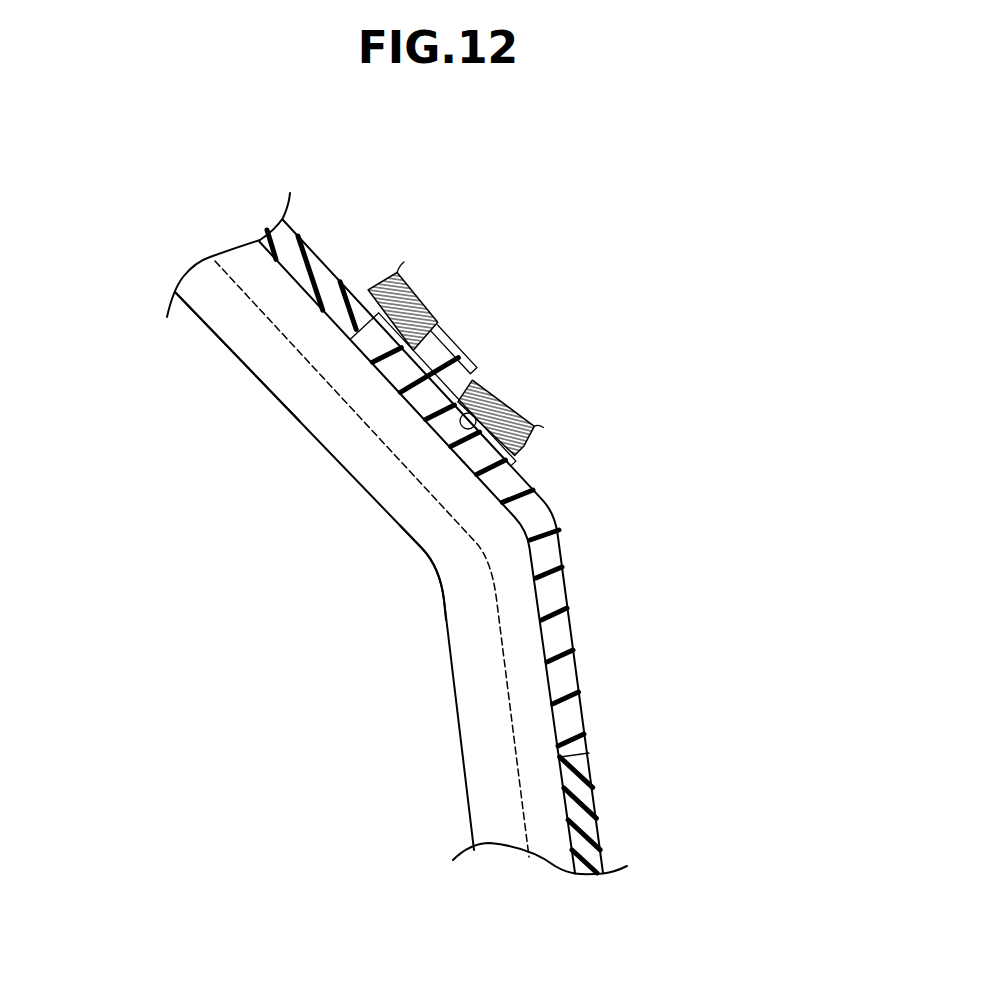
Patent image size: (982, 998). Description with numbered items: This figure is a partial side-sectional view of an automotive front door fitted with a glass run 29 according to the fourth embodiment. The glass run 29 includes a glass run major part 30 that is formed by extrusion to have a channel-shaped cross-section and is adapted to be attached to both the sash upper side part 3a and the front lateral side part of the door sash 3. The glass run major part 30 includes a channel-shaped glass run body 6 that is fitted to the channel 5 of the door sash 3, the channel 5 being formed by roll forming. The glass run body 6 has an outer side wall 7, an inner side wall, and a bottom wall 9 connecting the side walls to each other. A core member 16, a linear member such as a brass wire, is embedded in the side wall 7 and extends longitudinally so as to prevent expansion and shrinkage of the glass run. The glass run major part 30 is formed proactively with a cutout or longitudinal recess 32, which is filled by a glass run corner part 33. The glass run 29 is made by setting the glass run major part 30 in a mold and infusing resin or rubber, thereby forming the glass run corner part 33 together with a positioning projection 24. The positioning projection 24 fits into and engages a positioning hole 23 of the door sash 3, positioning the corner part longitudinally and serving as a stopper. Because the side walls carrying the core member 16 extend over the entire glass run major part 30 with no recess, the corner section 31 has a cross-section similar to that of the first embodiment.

The door sash 3 is at (592, 413).
The sash upper side part 3a is at (508, 413).
The channel 5 is at (508, 413).
The glass run body 6 is at (200, 282).
The outer side wall 7 is at (332, 533).
The bottom wall 9 is at (310, 247).
The core member 16 is at (247, 293).
The positioning hole 23 is at (480, 372).
The positioning projection 24 is at (438, 363).
The glass run 29 is at (672, 648).
The glass run major part 30 is at (208, 352).
The corner section 31 is at (435, 528).
The cutout 32 is at (547, 518).
The glass run corner part 33 is at (576, 657).